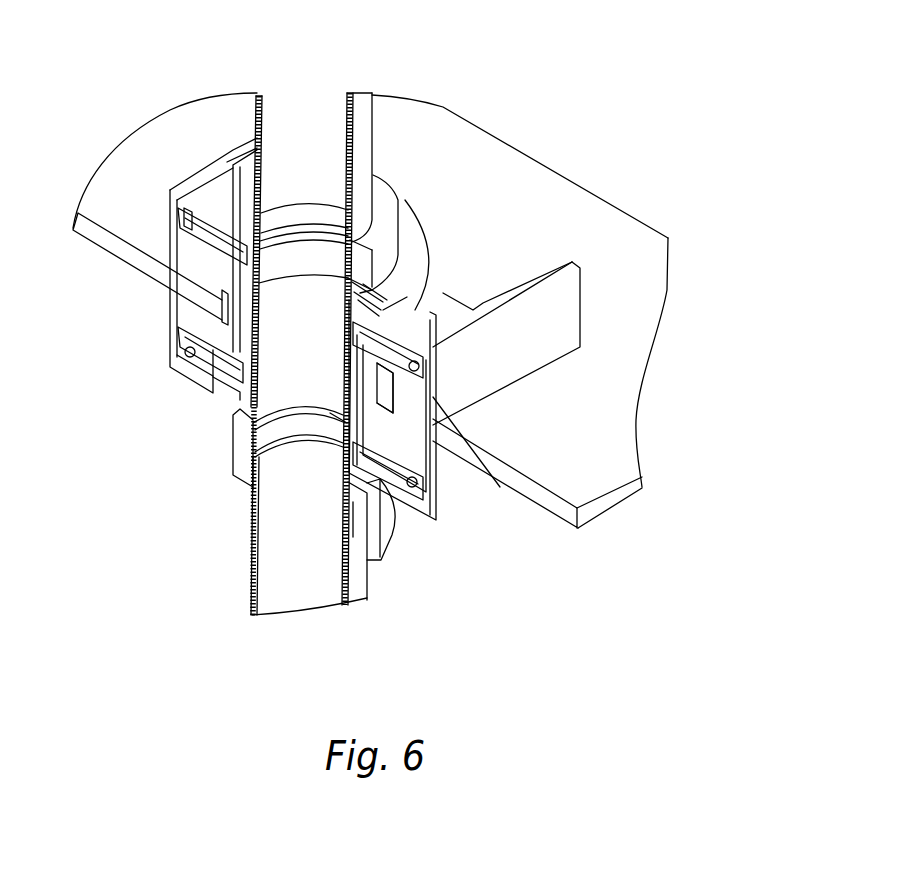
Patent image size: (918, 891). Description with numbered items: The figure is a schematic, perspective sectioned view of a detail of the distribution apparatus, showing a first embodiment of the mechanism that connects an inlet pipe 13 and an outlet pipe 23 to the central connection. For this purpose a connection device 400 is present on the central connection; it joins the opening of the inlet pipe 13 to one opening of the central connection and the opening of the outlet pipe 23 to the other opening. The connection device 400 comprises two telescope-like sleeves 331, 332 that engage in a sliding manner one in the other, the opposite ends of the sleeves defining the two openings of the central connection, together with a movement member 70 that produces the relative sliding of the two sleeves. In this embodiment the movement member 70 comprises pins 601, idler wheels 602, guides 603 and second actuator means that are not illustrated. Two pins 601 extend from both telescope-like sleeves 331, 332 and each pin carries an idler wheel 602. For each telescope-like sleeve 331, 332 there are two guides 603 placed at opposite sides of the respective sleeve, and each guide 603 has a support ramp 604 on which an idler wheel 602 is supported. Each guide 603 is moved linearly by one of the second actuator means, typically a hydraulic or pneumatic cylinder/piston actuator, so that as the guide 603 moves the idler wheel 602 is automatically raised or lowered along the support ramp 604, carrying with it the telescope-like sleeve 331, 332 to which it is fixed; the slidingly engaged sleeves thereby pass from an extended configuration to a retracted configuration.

The inlet pipe 13 is at (352, 118).
The outlet pipe 23 is at (255, 547).
The movement member 70 is at (411, 386).
The telescope-like sleeve 331 is at (373, 320).
The telescope-like sleeve 332 is at (375, 478).
The connection device 400 is at (565, 406).
The pin 601 is at (203, 240).
The idler wheel 602 is at (188, 240).
The guide 603 is at (173, 220).
The support ramp 604 is at (540, 272).